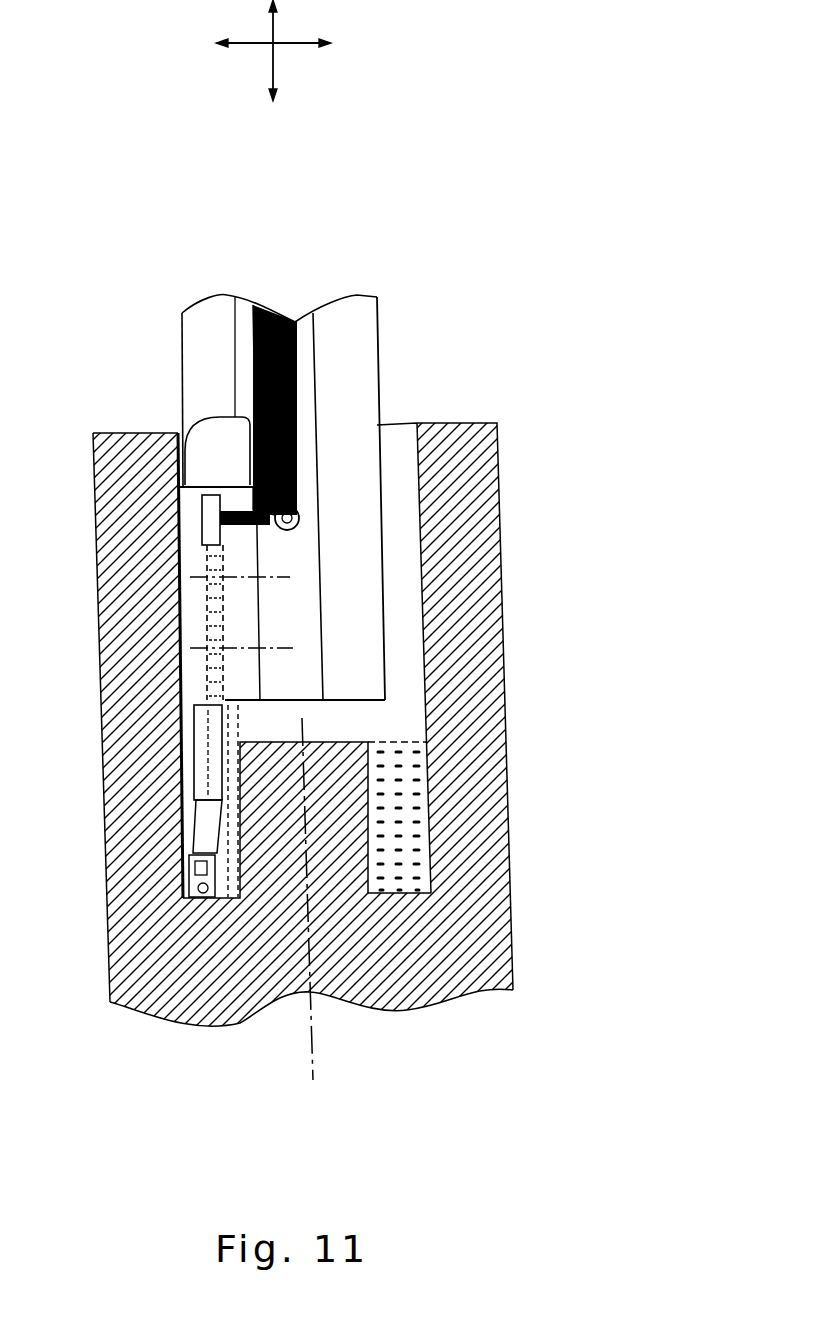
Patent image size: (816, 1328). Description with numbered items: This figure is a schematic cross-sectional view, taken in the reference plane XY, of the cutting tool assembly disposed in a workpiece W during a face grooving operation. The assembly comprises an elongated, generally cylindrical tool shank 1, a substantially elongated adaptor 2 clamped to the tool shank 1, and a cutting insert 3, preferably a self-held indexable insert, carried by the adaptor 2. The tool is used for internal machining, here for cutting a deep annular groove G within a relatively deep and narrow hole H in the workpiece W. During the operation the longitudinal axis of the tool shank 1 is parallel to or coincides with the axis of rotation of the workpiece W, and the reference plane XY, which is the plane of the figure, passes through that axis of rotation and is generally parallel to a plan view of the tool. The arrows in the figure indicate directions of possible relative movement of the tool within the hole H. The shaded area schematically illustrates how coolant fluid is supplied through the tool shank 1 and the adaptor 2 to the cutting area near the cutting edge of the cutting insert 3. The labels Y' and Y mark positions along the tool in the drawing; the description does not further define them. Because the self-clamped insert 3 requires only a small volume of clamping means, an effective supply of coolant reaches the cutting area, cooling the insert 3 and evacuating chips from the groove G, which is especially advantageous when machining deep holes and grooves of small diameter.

The tool shank 1 is at (357, 405).
The adaptor 2 is at (192, 515).
The cutting insert 3 is at (190, 887).
The reference plane XY is at (406, 155).
The hole H is at (403, 583).
The workpiece W is at (490, 680).
The annular groove G is at (410, 840).
The upper chain section Y' is at (158, 622).
The lower chain section Y is at (134, 793).